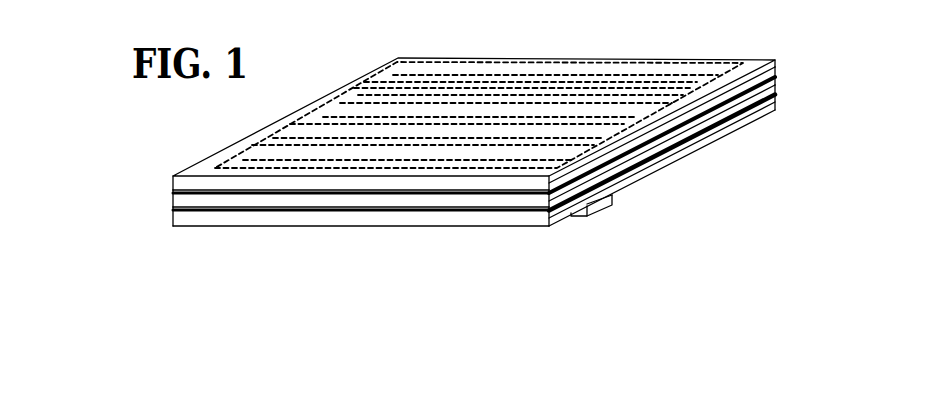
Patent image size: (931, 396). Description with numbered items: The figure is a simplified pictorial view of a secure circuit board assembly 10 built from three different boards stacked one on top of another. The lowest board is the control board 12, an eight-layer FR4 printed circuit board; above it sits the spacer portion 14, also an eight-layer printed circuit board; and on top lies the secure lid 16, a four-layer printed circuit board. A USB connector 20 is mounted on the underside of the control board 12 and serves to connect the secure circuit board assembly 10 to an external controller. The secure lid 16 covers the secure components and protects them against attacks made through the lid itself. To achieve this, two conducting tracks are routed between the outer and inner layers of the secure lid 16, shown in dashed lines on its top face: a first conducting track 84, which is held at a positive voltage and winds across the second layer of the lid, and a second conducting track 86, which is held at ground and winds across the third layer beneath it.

The secure circuit board assembly 10 is at (254, 268).
The control board 12 is at (722, 133).
The spacer portion 14 is at (773, 88).
The secure lid 16 is at (776, 63).
The USB connector 20 is at (600, 206).
The first conducting track 84 is at (498, 63).
The second conducting track 86 is at (427, 75).